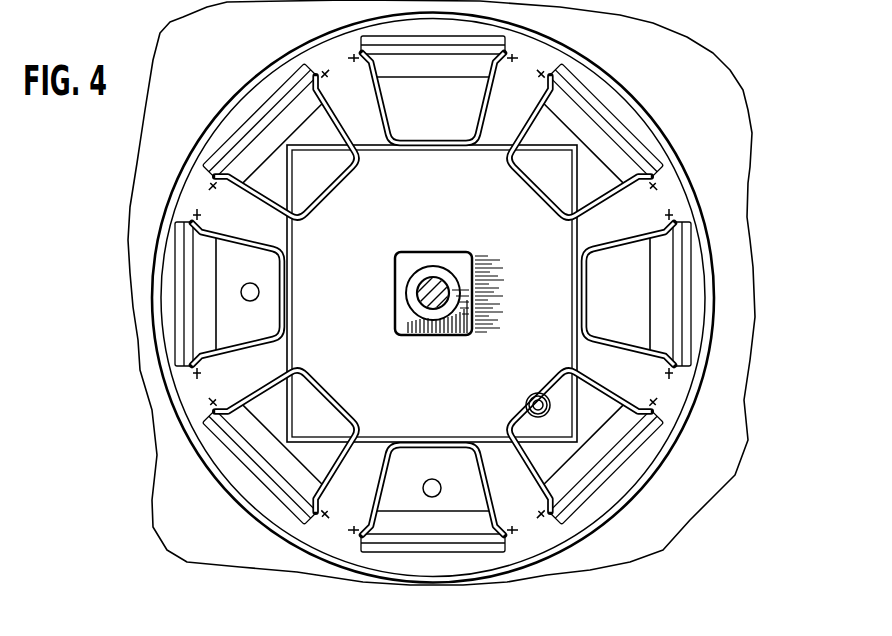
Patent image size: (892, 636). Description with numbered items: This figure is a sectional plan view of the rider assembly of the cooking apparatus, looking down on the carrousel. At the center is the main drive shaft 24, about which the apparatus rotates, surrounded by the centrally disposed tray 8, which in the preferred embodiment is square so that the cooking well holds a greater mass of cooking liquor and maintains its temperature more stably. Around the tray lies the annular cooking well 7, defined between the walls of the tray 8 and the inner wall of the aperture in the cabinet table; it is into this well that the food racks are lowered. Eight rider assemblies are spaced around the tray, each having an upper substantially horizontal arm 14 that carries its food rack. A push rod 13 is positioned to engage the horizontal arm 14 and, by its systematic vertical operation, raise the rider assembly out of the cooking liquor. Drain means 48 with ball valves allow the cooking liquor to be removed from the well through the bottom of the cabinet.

The annular cooking well 7 is at (633, 210).
The tray 8 is at (452, 193).
The push rod 13 is at (549, 404).
The upper substantially horizontal arm 14 is at (590, 298).
The main drive shaft 24 is at (449, 292).
The drain means 48 is at (424, 483).